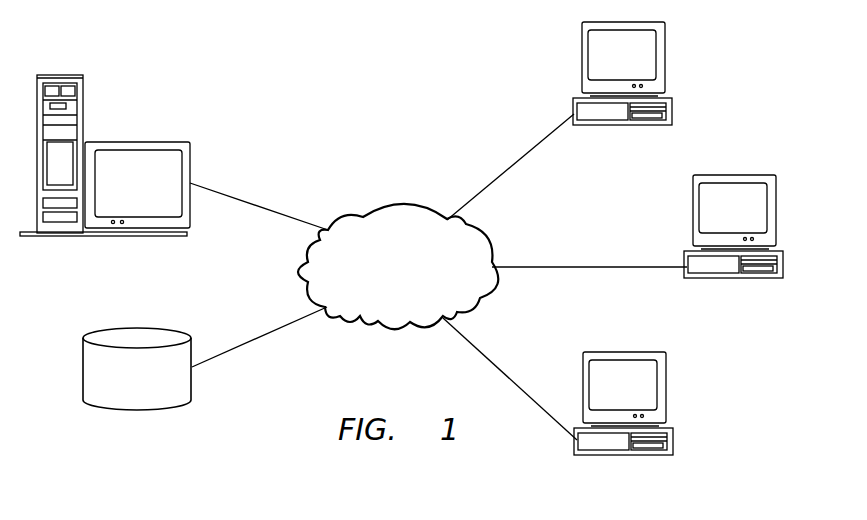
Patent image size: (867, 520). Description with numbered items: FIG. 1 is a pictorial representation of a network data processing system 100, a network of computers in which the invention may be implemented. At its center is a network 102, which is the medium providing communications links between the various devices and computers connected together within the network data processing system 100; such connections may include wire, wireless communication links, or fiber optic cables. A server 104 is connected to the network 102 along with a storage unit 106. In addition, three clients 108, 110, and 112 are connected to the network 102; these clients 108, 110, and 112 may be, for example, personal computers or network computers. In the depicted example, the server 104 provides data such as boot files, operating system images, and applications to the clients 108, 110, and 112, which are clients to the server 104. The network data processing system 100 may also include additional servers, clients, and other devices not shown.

The network data processing system 100 is at (275, 86).
The network 102 is at (420, 291).
The server 104 is at (82, 102).
The storage unit 106 is at (83, 372).
The client 108 is at (665, 62).
The client 110 is at (777, 213).
The client 112 is at (667, 392).